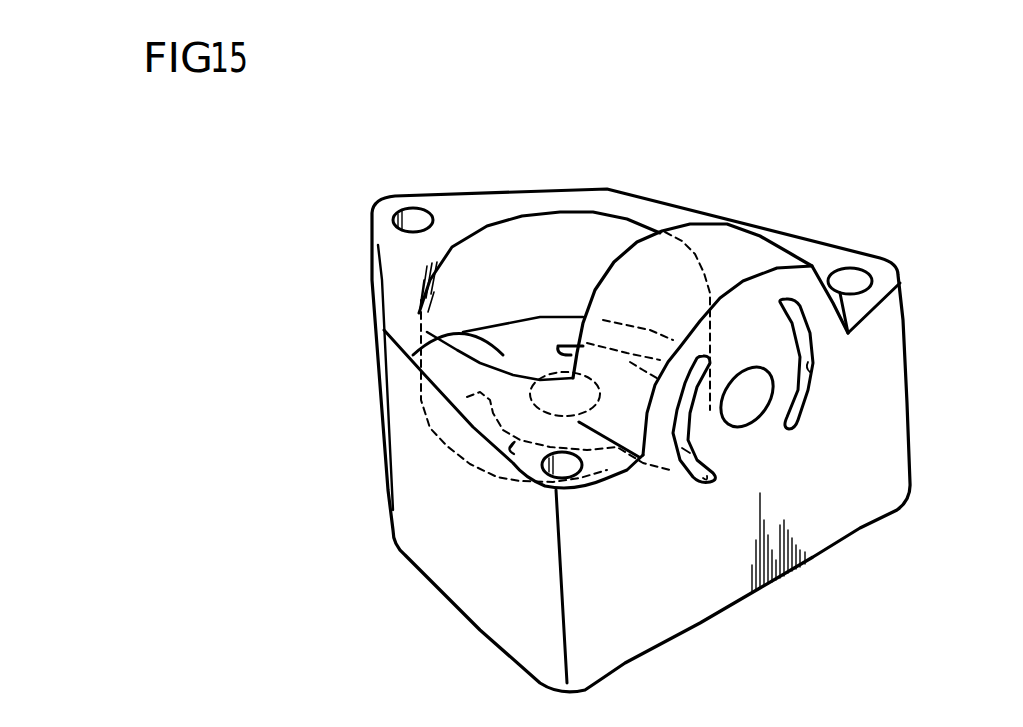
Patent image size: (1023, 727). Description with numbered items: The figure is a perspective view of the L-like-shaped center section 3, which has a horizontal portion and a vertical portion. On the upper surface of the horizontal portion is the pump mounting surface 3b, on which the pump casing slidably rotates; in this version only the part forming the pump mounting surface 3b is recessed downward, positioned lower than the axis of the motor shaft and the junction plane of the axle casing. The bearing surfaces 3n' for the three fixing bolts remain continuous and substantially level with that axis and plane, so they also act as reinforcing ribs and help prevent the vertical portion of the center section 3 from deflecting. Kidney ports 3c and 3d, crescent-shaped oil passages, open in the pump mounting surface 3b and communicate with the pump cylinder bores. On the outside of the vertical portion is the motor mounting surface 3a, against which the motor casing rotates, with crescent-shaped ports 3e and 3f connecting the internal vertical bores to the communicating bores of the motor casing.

The L-like-shaped center section 3 is at (858, 242).
The motor mounting surface 3a is at (810, 293).
The pump mounting surface 3b is at (445, 335).
The kidney port 3c is at (510, 448).
The kidney port 3d is at (567, 423).
The kidney or crescent shape port 3e is at (716, 478).
The kidney or crescent shape port 3f is at (815, 365).
The bearing surfaces 3n' is at (437, 175).